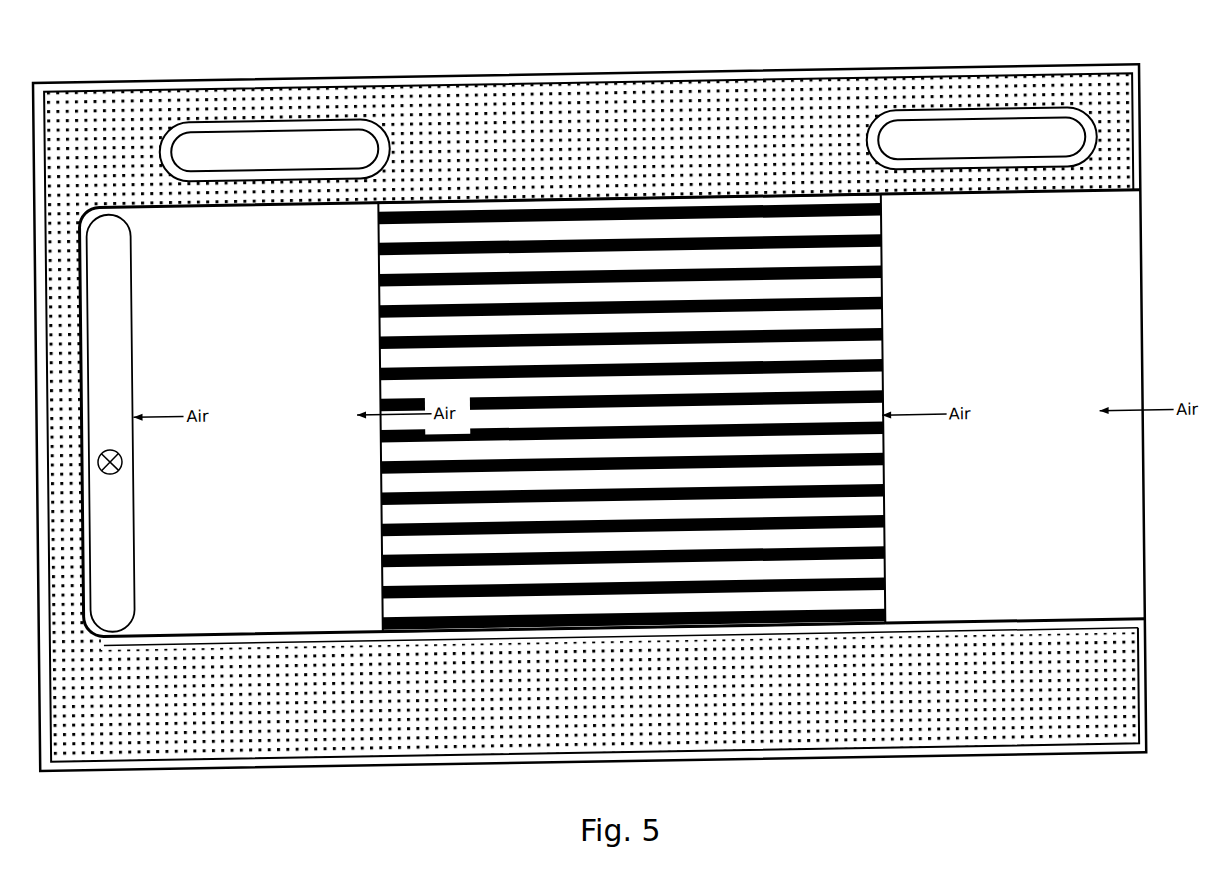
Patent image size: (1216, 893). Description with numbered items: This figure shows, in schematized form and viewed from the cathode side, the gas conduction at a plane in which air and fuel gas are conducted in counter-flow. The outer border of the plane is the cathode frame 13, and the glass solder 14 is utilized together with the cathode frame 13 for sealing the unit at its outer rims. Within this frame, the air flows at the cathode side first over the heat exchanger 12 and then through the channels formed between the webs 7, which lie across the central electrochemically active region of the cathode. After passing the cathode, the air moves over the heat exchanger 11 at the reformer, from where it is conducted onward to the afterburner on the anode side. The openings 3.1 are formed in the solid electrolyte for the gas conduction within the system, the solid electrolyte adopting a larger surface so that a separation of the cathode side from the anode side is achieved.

The openings 3.1 is at (234, 154).
The webs 7 is at (579, 636).
The heat exchanger 11 is at (257, 442).
The heat exchanger 12 is at (1008, 459).
The cathode frame 13 is at (254, 76).
The glass solder 14 is at (624, 172).